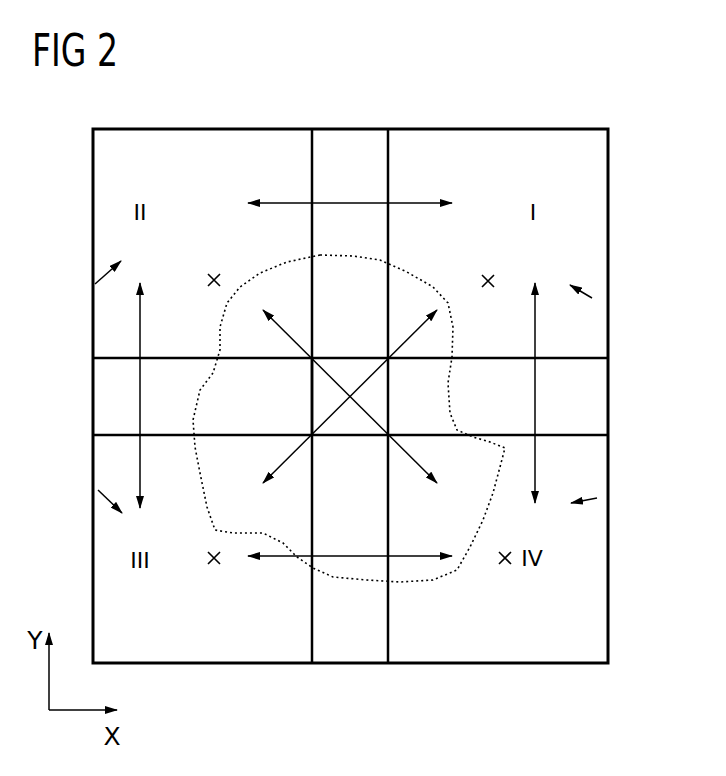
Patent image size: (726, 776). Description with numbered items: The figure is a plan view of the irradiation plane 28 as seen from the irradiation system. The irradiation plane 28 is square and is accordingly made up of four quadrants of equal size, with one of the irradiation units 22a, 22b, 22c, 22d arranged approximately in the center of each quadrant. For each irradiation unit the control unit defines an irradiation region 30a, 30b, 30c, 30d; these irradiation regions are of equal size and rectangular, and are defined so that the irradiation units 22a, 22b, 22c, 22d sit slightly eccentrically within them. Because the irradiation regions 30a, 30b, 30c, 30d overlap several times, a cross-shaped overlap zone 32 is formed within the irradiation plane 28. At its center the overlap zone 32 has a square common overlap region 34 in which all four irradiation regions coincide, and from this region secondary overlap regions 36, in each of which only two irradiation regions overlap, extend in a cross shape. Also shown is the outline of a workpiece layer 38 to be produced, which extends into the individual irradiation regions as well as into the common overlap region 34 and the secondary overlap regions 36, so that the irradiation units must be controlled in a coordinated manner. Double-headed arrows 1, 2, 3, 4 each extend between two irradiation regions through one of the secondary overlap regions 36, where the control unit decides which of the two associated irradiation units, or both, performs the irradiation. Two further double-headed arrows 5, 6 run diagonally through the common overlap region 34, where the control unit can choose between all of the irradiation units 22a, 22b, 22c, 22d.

The irradiation plane 28 is at (482, 128).
The overlap zone 32 is at (364, 164).
The common overlap region 34 is at (309, 392).
The secondary overlap regions 36 is at (345, 143).
The workpiece layer 38 is at (500, 521).
The irradiation unit 22a is at (214, 566).
The irradiation unit 22b is at (506, 566).
The irradiation unit 22c is at (206, 280).
The irradiation unit 22d is at (497, 281).
The irradiation region 30a is at (97, 489).
The irradiation region 30b is at (597, 498).
The irradiation region 30c is at (94, 288).
The irradiation region 30d is at (594, 299).
The double-headed arrow 1 is at (545, 393).
The double-headed arrow 2 is at (350, 189).
The double-headed arrow 3 is at (152, 395).
The double-headed arrow 4 is at (350, 541).
The double-headed arrow 5 is at (350, 396).
The double-headed arrow 6 is at (350, 396).